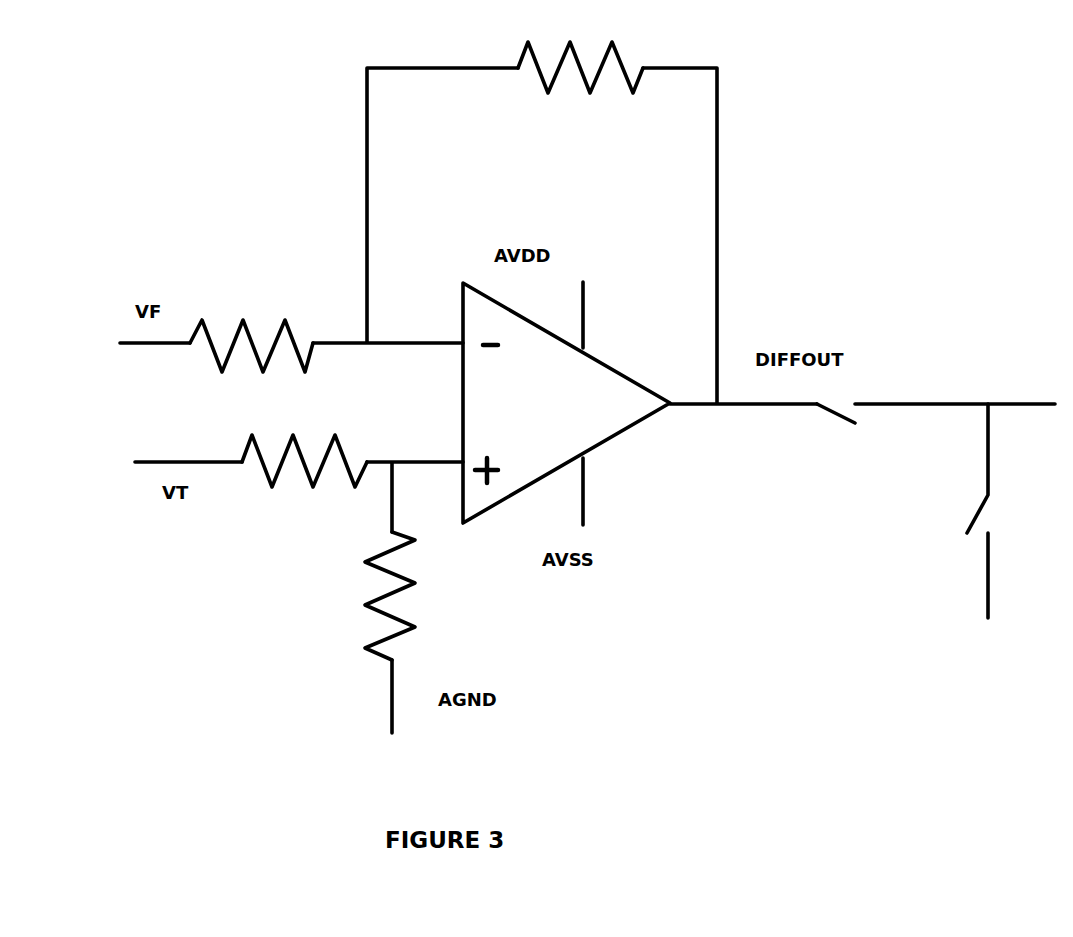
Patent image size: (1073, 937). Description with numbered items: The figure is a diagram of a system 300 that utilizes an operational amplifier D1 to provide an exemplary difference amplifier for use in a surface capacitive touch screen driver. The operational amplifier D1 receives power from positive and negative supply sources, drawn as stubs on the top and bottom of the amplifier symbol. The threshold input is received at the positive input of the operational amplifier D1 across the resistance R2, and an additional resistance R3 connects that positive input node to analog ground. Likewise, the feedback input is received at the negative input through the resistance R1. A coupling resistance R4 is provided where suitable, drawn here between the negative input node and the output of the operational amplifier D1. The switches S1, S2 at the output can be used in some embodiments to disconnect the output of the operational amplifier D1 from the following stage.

The resistance R1 is at (251, 332).
The resistance R2 is at (304, 448).
The additional resistance R3 is at (409, 596).
The coupling resistance R4 is at (580, 54).
The operational amplifier D1 is at (566, 403).
The switch S1 is at (936, 388).
The switch S2 is at (1010, 511).
The system 300 is at (632, 813).